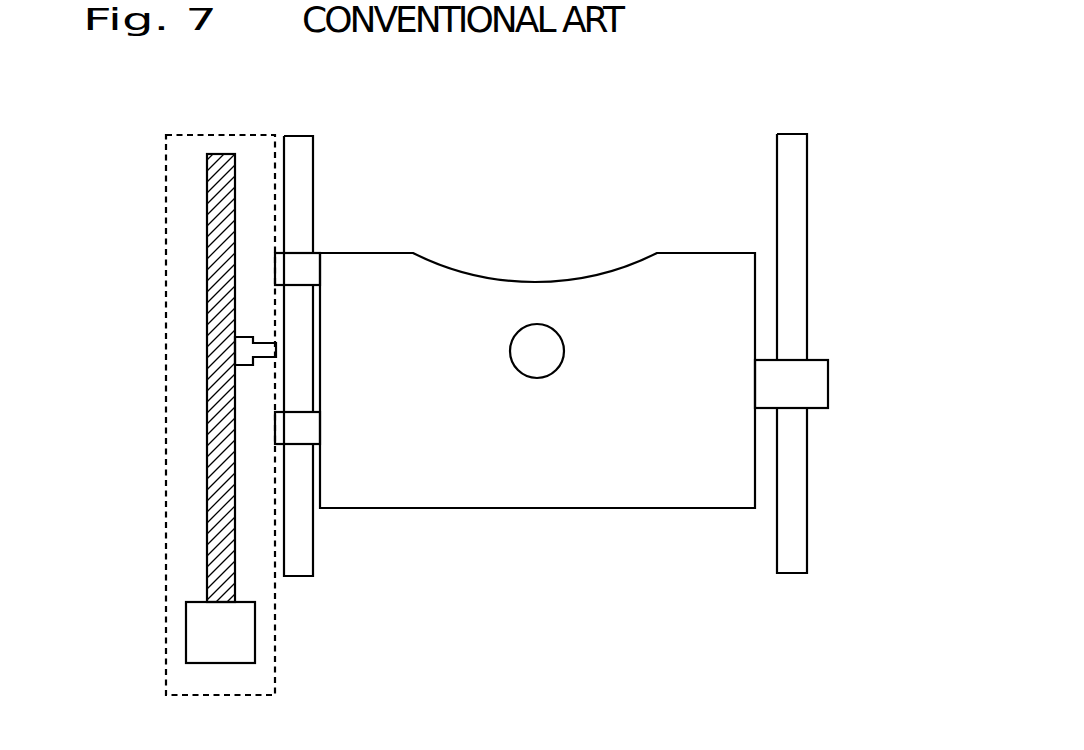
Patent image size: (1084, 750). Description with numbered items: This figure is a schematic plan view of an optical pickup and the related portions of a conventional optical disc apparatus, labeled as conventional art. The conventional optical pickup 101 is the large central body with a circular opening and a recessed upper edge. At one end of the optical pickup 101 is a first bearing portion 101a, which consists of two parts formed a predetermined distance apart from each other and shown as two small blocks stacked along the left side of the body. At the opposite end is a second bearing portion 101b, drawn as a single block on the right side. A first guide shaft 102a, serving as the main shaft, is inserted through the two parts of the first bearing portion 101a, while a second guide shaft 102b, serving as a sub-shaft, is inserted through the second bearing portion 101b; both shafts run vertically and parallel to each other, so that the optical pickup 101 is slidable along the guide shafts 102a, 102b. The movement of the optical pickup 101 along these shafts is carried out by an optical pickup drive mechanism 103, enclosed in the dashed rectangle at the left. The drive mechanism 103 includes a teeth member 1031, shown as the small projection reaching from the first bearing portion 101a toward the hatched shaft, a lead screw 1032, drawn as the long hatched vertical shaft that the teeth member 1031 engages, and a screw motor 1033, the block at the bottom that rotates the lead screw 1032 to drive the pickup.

The optical pickup 101 is at (655, 254).
The first bearing portion 101a is at (320, 272).
The second bearing portion 101b is at (820, 384).
The first guide shaft 102a is at (297, 577).
The second guide shaft 102b is at (795, 568).
The optical pickup drive mechanism 103 is at (208, 134).
The teeth member 1031 is at (236, 350).
The lead screw 1032 is at (210, 261).
The screw motor 1033 is at (198, 638).